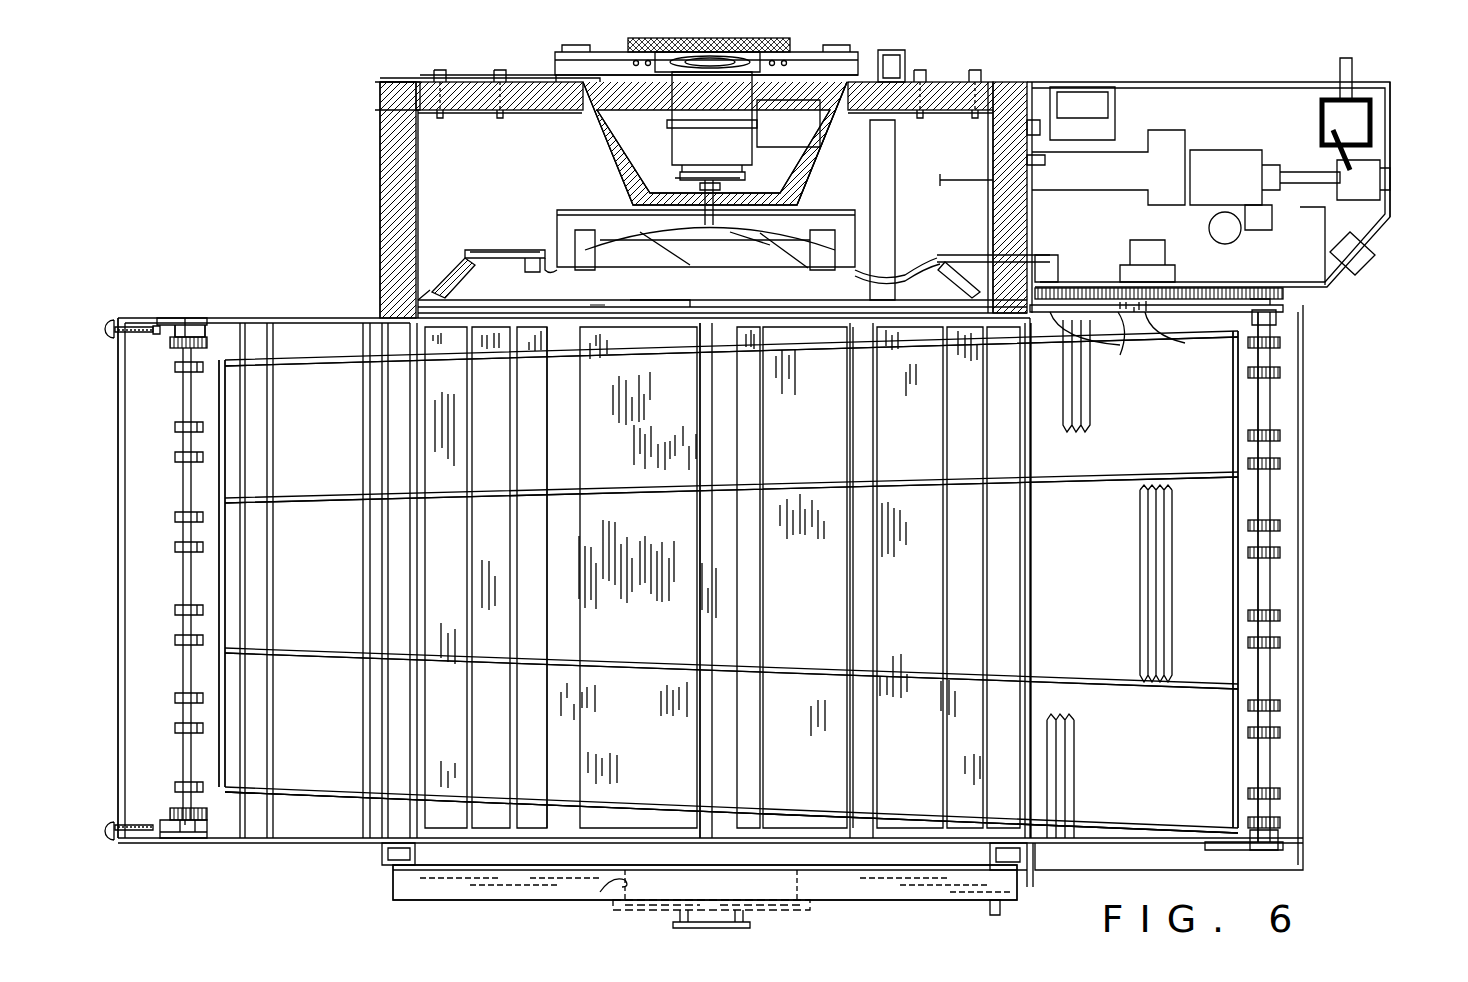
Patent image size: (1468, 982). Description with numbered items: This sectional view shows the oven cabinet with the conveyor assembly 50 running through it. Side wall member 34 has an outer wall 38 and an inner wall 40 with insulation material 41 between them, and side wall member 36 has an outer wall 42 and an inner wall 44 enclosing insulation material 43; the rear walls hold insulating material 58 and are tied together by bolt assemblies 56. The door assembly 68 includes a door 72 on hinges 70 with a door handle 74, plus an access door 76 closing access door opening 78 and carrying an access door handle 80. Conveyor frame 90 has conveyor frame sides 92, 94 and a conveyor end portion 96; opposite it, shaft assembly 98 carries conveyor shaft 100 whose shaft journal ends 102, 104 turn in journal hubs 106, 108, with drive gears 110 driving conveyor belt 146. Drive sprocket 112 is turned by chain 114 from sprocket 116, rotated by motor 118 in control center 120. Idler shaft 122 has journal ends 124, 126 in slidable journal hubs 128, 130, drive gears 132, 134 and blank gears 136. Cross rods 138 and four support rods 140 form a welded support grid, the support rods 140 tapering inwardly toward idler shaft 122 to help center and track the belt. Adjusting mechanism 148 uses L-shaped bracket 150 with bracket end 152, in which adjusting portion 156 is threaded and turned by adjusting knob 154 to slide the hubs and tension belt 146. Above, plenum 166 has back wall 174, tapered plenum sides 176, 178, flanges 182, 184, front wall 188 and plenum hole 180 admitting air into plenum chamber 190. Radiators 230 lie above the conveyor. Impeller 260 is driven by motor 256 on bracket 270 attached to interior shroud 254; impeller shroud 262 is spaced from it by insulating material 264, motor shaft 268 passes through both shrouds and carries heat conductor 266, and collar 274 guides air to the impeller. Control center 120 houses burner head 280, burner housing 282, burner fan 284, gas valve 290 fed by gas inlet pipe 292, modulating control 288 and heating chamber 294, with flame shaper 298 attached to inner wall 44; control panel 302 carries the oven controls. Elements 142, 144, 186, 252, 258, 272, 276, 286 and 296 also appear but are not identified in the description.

The side wall member 34 is at (363, 200).
The side wall member 36 is at (1036, 210).
The outer wall 38 is at (385, 248).
The inner wall 40 is at (380, 141).
The insulation material 41 is at (395, 112).
The outer wall 42 is at (1030, 170).
The insulation material 43 is at (1016, 82).
The inner wall 44 is at (993, 204).
The conveyor assembly 50 is at (292, 204).
The bolt assemblies 56 is at (498, 72).
The insulating material 58 is at (425, 78).
The door assembly 68 is at (909, 912).
The hinges 70 is at (390, 870).
The door 72 is at (490, 888).
The door handle 74 is at (1000, 910).
The access door 76 is at (806, 910).
The access door opening 78 is at (600, 892).
The access door handle 80 is at (745, 920).
The conveyor frame 90 is at (331, 860).
The conveyor frame side 92 is at (258, 320).
The conveyor frame side 94 is at (262, 835).
The conveyor end portion 96 is at (120, 592).
The shaft assembly 98 is at (1294, 496).
The conveyor shaft 100 is at (1272, 580).
The shaft journal end 102 is at (1280, 836).
The shaft journal end 104 is at (1283, 340).
The journal hub 106 is at (1275, 846).
The journal hub 108 is at (1283, 313).
The drive gears 110 is at (1283, 372).
The drive sprocket 112 is at (1283, 293).
The chain 114 is at (1152, 330).
The sprocket 116 is at (1122, 345).
The motor 118 is at (1046, 270).
The control center 120 is at (1399, 144).
The idler shaft 122 is at (183, 480).
The journal end 124 is at (172, 838).
The journal end 126 is at (175, 332).
The journal hub 128 is at (192, 836).
The journal hub 130 is at (205, 330).
The drive gear 132 is at (207, 342).
The drive gear 134 is at (177, 813).
The blank gears 136 is at (175, 457).
The cross rods 138 is at (365, 460).
The support rods 140 is at (645, 358).
The basket side frame 142 is at (225, 580).
The basket side frame 144 is at (1233, 730).
The conveyor belt 146 is at (1090, 413).
The adjusting mechanism 148 is at (205, 299).
The L-shaped bracket 150 is at (186, 325).
The bracket end 152 is at (153, 338).
The adjusting knob 154 is at (109, 322).
The adjusting portion 156 is at (140, 336).
The plenum 166 is at (521, 192).
The back wall 174 is at (482, 252).
The plenum side 176 is at (450, 280).
The plenum side 178 is at (970, 270).
The plenum hole 180 is at (530, 246).
The flange 182 is at (922, 300).
The flange 184 is at (520, 266).
The junction box 186 is at (890, 50).
The front wall 188 is at (655, 307).
The plenum chamber 190 is at (594, 294).
The radiator plates 230 is at (700, 586).
The motor assembly 252 is at (592, 35).
The interior shroud 254 is at (816, 78).
The motor 256 is at (642, 60).
The bearing 258 is at (714, 58).
The impeller 260 is at (724, 258).
The impeller shroud 262 is at (612, 153).
The insulating material 264 is at (798, 161).
The heat conductor 266 is at (675, 178).
The motor shaft 268 is at (712, 178).
The bracket 270 is at (776, 113).
The motor 272 is at (712, 122).
The collar 274 is at (858, 215).
The sensor 276 is at (1148, 250).
The burner head 280 is at (1225, 165).
The burner housing 282 is at (1118, 177).
The burner fan 284 is at (1232, 234).
The relay box 286 is at (1080, 100).
The modulating control 288 is at (1378, 158).
The gas valve 290 is at (1330, 119).
The gas inlet pipe 292 is at (1352, 74).
The heating chamber 294 is at (937, 152).
The blades 296 is at (780, 226).
The flame shaper 298 is at (946, 180).
The control panel 302 is at (1372, 236).